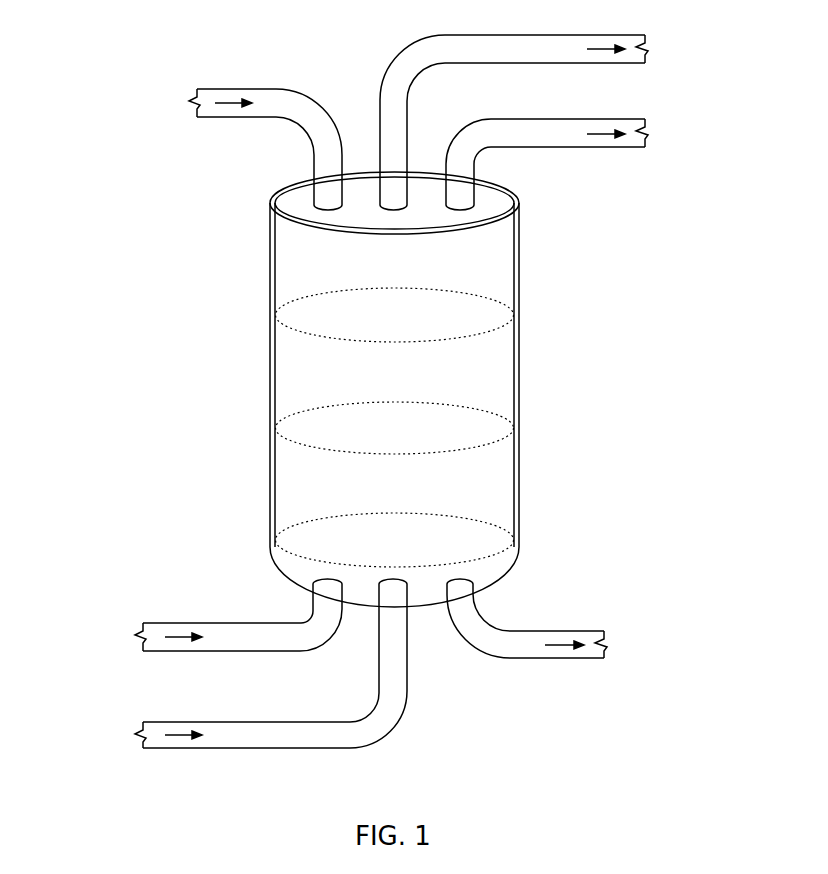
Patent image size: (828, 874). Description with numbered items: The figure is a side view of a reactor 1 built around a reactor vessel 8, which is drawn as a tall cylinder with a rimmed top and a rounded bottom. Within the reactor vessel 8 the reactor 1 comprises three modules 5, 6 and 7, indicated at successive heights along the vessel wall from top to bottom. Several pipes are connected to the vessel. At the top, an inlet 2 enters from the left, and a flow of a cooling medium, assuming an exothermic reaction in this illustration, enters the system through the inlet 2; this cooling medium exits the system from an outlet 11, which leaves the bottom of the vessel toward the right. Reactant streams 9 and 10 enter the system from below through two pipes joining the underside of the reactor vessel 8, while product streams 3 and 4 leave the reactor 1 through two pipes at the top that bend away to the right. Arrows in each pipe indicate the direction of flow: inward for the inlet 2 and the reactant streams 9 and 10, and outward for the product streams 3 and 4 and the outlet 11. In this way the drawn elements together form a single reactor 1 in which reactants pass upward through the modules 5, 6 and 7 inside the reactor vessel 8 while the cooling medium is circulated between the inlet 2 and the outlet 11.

The reactor 1 is at (232, 63).
The inlet 2 is at (240, 149).
The product stream 3 is at (537, 122).
The product stream 4 is at (570, 164).
The module 5 is at (503, 250).
The module 6 is at (495, 367).
The module 7 is at (500, 481).
The reactor vessel 8 is at (268, 286).
The reactant stream 9 is at (194, 615).
The reactant stream 10 is at (228, 663).
The outlet 11 is at (569, 619).